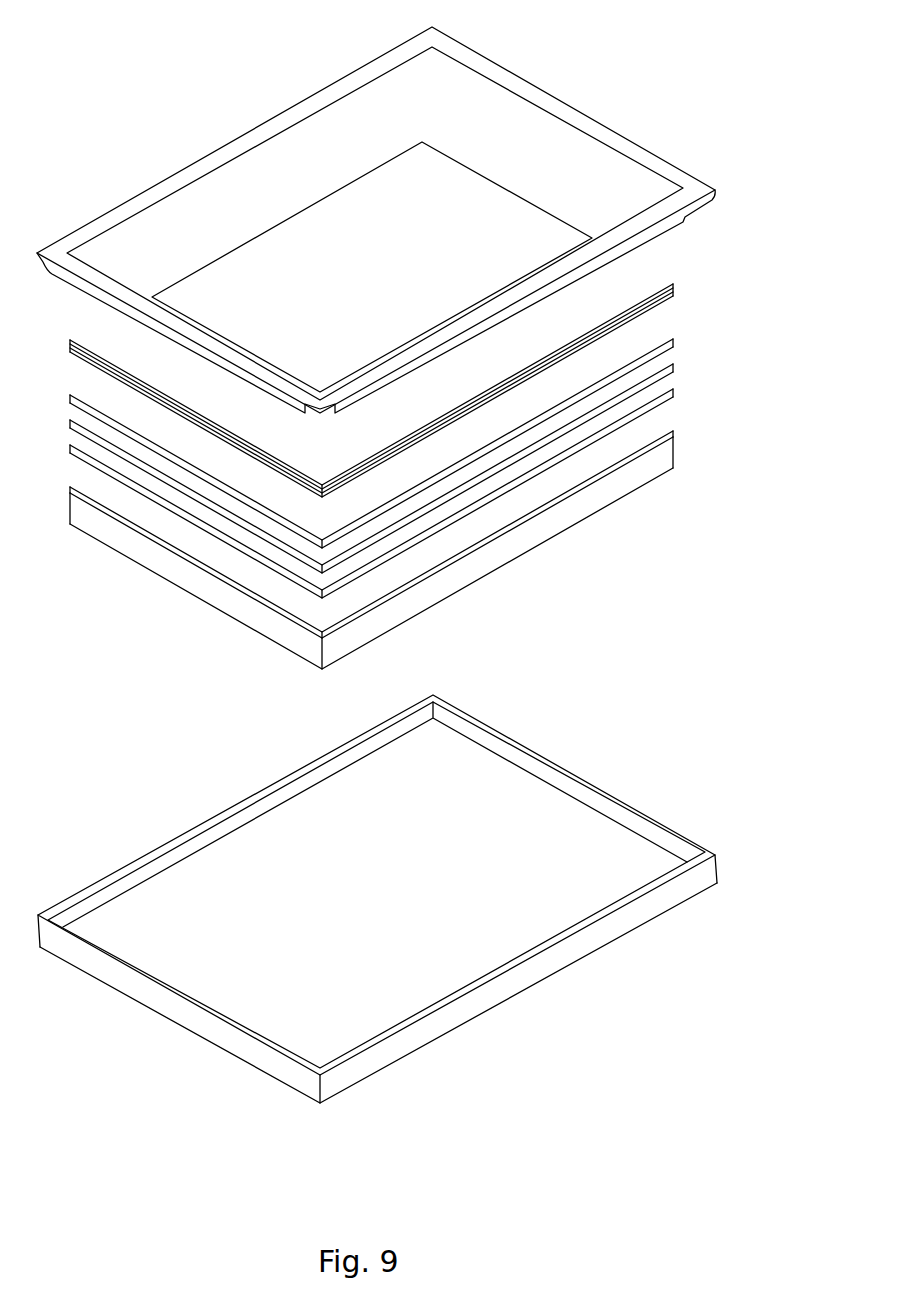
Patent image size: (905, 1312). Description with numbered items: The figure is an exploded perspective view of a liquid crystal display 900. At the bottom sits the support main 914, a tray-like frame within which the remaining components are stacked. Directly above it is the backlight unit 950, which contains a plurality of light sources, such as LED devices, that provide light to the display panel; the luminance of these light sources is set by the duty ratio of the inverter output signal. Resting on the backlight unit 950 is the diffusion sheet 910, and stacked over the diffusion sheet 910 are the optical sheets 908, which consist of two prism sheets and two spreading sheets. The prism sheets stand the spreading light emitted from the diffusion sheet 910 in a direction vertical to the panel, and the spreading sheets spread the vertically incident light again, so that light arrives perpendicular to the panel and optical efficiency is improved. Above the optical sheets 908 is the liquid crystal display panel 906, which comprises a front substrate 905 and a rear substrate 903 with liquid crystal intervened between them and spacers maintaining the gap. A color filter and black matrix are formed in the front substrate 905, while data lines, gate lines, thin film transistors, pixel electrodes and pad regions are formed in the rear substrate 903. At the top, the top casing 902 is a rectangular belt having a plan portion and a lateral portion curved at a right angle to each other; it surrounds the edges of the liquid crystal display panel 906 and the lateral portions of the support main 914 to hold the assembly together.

The liquid crystal display 900 is at (128, 70).
The top casing 902 is at (653, 160).
The front substrate 905 is at (674, 283).
The rear substrate 903 is at (676, 292).
The liquid crystal display panel 906 is at (445, 379).
The optical sheets 908 is at (690, 334).
The diffusion sheet 910 is at (672, 432).
The backlight unit 950 is at (622, 489).
The support main 914 is at (667, 823).